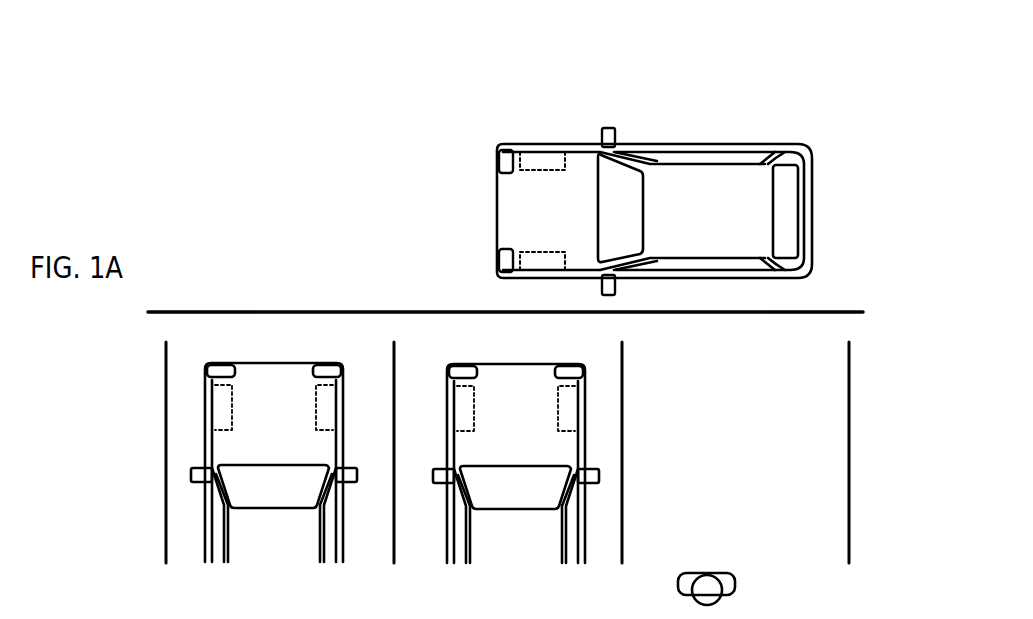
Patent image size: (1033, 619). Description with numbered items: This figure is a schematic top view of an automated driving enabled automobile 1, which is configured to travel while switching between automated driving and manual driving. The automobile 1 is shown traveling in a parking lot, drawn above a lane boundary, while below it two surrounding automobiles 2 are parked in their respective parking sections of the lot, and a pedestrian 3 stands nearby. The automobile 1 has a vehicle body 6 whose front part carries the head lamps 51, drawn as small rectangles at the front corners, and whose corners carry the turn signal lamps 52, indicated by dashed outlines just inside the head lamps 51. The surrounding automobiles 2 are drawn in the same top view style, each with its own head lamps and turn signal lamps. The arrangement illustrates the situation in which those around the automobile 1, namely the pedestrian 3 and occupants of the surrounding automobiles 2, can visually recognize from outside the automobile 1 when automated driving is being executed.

The automobile 1 is at (698, 115).
The surrounding automobile 2 is at (277, 385).
The pedestrian 3 is at (735, 585).
The vehicle body 6 is at (588, 143).
The head lamp 51 is at (497, 159).
The turn signal lamp 52 is at (502, 143).